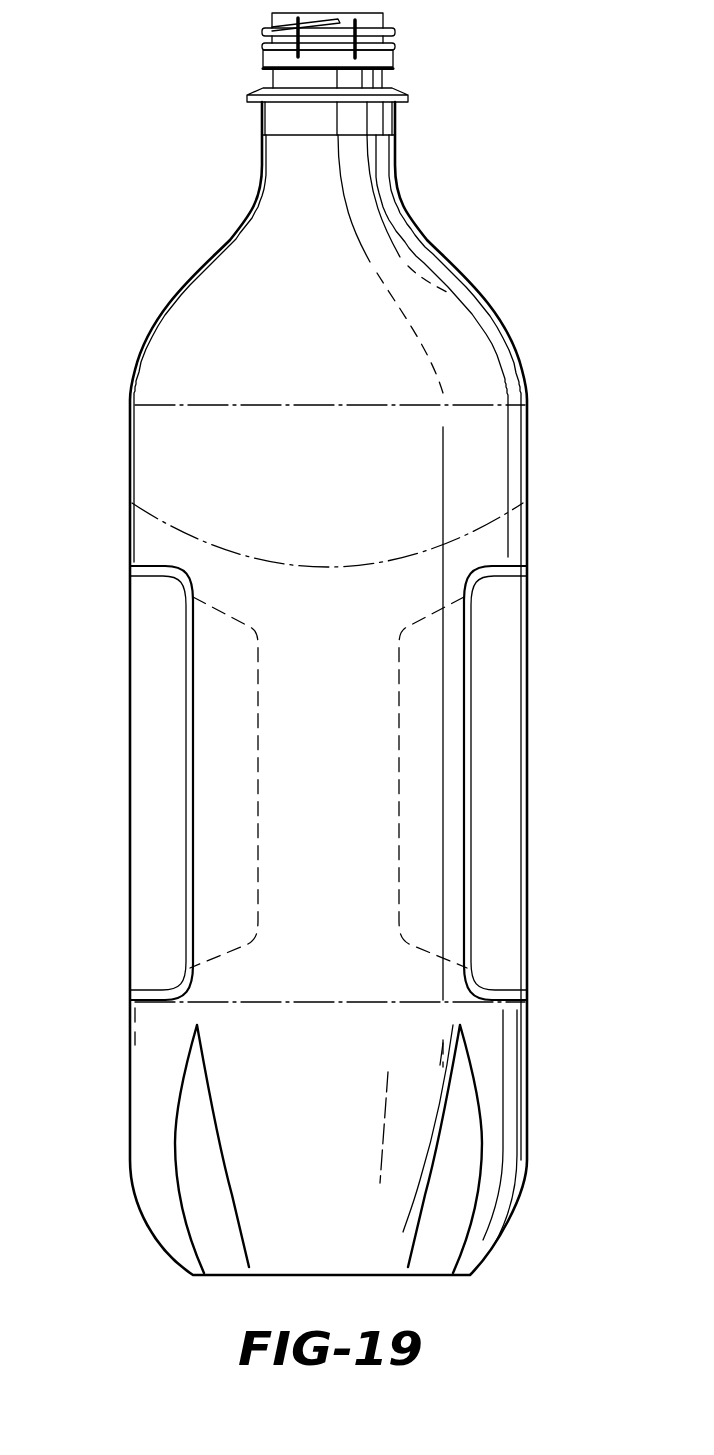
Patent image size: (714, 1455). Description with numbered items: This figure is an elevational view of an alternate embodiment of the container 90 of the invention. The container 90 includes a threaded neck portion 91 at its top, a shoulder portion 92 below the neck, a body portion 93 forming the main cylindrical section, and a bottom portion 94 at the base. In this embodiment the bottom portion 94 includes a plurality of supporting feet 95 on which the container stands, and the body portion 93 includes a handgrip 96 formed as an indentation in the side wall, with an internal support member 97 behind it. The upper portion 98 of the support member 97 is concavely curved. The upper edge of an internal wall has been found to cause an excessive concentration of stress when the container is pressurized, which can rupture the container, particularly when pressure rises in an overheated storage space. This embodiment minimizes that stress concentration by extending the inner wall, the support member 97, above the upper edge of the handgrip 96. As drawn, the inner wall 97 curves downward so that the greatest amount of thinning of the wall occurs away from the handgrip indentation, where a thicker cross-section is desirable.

The container 90 is at (568, 458).
The threaded neck portion 91 is at (270, 24).
The shoulder portion 92 is at (428, 237).
The body portion 93 is at (128, 538).
The bottom portion 94 is at (532, 1088).
The supporting feet 95 is at (160, 1173).
The handgrip 96 is at (498, 870).
The internal support member 97 is at (346, 696).
The upper portion 98 is at (296, 565).